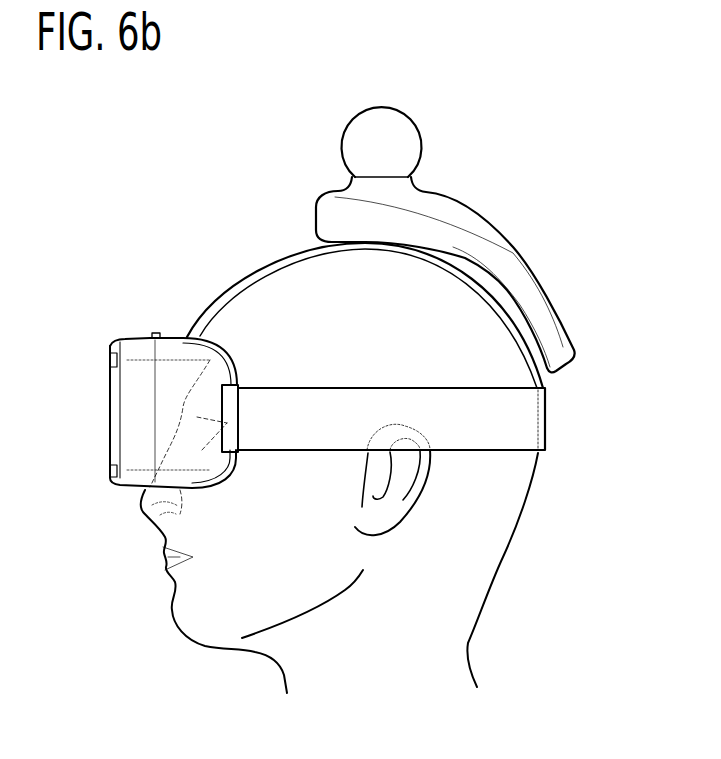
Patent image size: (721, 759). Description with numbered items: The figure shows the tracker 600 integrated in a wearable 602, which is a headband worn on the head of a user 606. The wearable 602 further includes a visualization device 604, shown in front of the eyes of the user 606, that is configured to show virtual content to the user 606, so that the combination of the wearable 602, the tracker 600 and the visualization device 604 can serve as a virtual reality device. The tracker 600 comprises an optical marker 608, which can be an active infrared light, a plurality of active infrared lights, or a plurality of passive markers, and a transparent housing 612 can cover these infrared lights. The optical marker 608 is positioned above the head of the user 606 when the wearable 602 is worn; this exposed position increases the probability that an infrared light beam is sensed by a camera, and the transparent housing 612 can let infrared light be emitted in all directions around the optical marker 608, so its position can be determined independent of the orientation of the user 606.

The tracker 600 is at (507, 260).
The wearable 602 is at (222, 288).
The visualization device 604 is at (127, 413).
The user 606 is at (510, 503).
The optical marker 608 is at (407, 143).
The transparent housing 612 is at (370, 105).